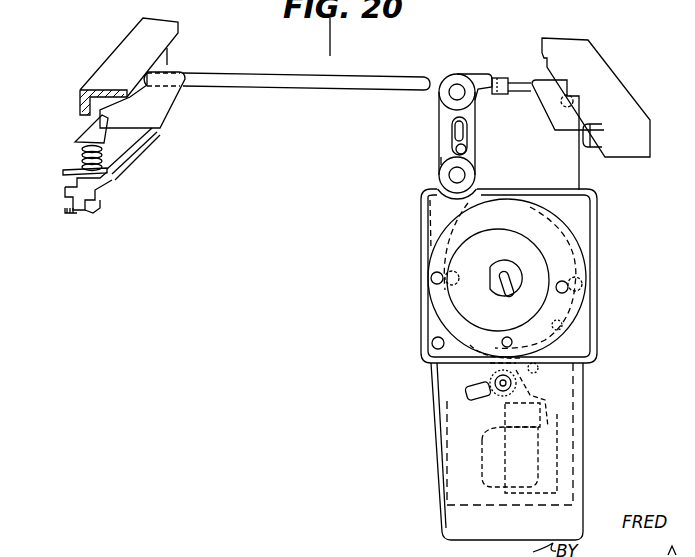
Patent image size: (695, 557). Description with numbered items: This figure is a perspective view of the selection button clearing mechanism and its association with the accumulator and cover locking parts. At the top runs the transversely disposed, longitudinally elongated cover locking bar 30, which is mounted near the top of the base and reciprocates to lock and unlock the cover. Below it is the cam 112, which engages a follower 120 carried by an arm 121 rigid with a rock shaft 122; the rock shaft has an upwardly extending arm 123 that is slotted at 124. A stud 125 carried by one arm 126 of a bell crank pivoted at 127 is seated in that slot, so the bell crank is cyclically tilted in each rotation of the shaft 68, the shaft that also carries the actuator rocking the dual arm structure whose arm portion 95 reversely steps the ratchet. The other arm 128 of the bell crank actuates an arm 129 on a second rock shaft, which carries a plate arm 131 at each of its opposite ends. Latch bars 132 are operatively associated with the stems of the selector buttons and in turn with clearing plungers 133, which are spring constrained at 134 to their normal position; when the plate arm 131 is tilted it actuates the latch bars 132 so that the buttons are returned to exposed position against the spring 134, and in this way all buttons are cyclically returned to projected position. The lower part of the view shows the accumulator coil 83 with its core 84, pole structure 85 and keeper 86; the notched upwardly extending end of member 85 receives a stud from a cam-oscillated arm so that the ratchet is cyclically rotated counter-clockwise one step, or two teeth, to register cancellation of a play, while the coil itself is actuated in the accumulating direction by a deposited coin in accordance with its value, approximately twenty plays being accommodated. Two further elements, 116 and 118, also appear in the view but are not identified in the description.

The cover locking bar 30 is at (362, 80).
The shaft 68 is at (515, 282).
The coil 83 is at (487, 458).
The core 84 is at (483, 438).
The pole structure 85 is at (552, 465).
The keeper 86 is at (550, 405).
The dual arm structure arm portion 95 is at (565, 347).
The cam 112 is at (534, 257).
The mounting screw 116 is at (431, 345).
The mounting rail 118 is at (524, 0).
The follower 120 is at (431, 281).
The arm 121 is at (418, 232).
The rock shaft 122 is at (450, 176).
The upwardly extending arm 123 is at (450, 154).
The slot 124 is at (452, 128).
The stud 125 is at (466, 149).
The bell crank arm 126 is at (448, 114).
The bell crank pivot 127 is at (456, 84).
The other bell crank arm 128 is at (478, 72).
The arm 129 is at (492, 90).
The plate arm 131 is at (156, 114).
The latch bars 132 is at (77, 213).
The clearing plungers 133 is at (92, 203).
The spring 134 is at (103, 165).